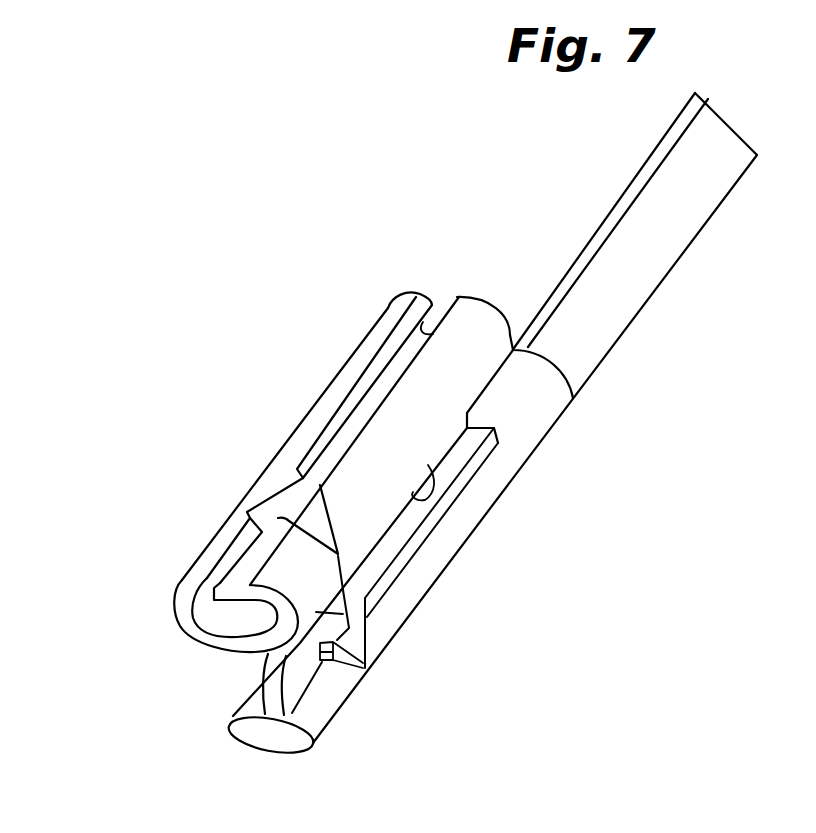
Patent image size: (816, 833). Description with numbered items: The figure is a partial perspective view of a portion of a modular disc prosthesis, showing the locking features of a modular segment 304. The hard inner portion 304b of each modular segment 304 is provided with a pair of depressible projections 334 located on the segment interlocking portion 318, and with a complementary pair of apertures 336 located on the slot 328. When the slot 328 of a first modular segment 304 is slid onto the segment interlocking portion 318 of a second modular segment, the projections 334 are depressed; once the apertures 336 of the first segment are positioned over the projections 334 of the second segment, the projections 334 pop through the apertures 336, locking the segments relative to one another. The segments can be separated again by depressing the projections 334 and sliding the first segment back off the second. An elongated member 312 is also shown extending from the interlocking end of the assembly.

The tube 312 is at (627, 182).
The segment interlocking portion 318 is at (440, 580).
The modular segment 304 is at (173, 605).
The hard inner portion 304b is at (387, 308).
The slot 328 is at (253, 625).
The apertures 336 is at (312, 521).
The depressible projections 334 is at (366, 668).